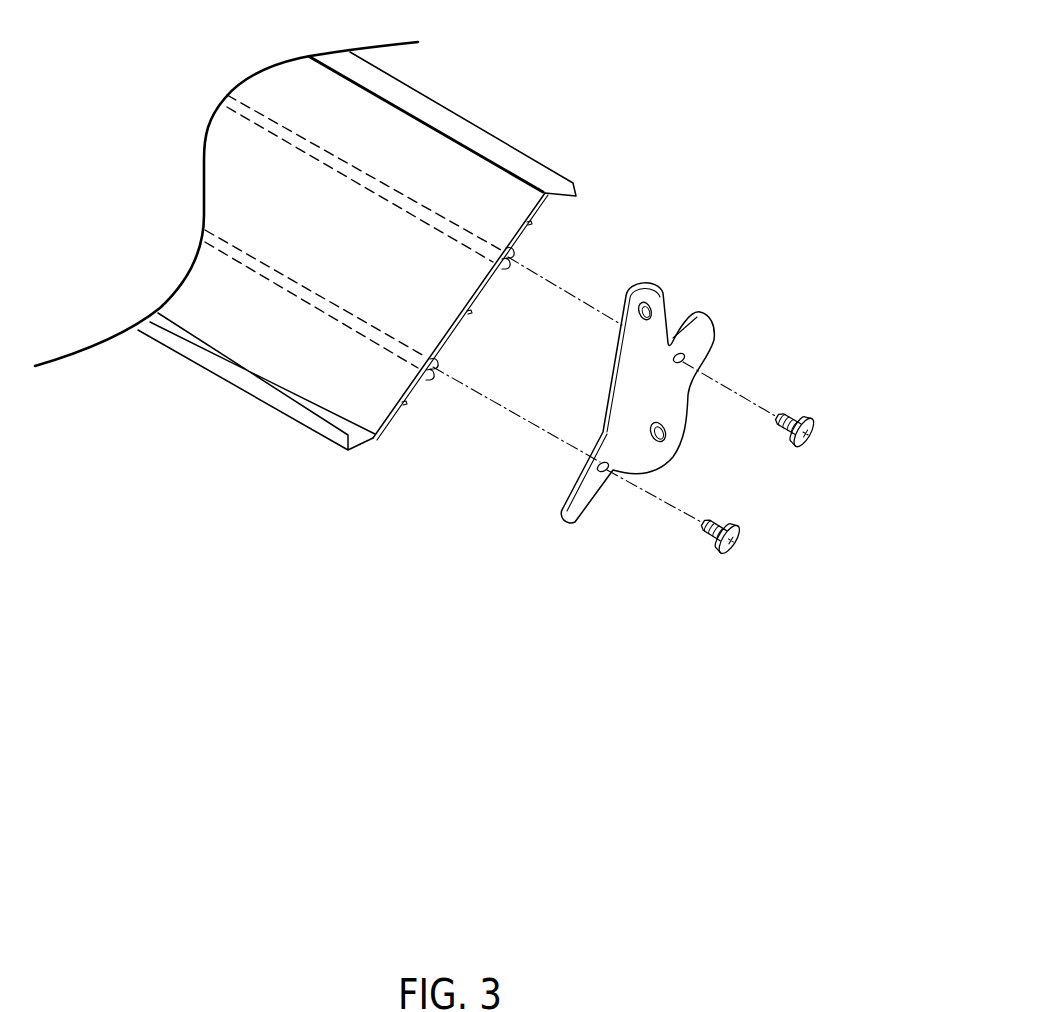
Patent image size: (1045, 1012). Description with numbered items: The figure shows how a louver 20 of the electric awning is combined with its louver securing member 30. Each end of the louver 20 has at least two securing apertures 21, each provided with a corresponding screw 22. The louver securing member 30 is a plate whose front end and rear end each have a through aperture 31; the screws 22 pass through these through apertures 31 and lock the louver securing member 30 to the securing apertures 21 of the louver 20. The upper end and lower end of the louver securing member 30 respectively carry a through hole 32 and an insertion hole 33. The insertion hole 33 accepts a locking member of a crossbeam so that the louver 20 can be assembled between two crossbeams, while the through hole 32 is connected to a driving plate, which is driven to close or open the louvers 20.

The louver 20 is at (462, 113).
The securing aperture 21 is at (507, 255).
The screw 22 is at (803, 415).
The louver securing member 30 is at (551, 513).
The through aperture 31 is at (681, 357).
The through hole 32 is at (647, 308).
The insertion hole 33 is at (666, 434).